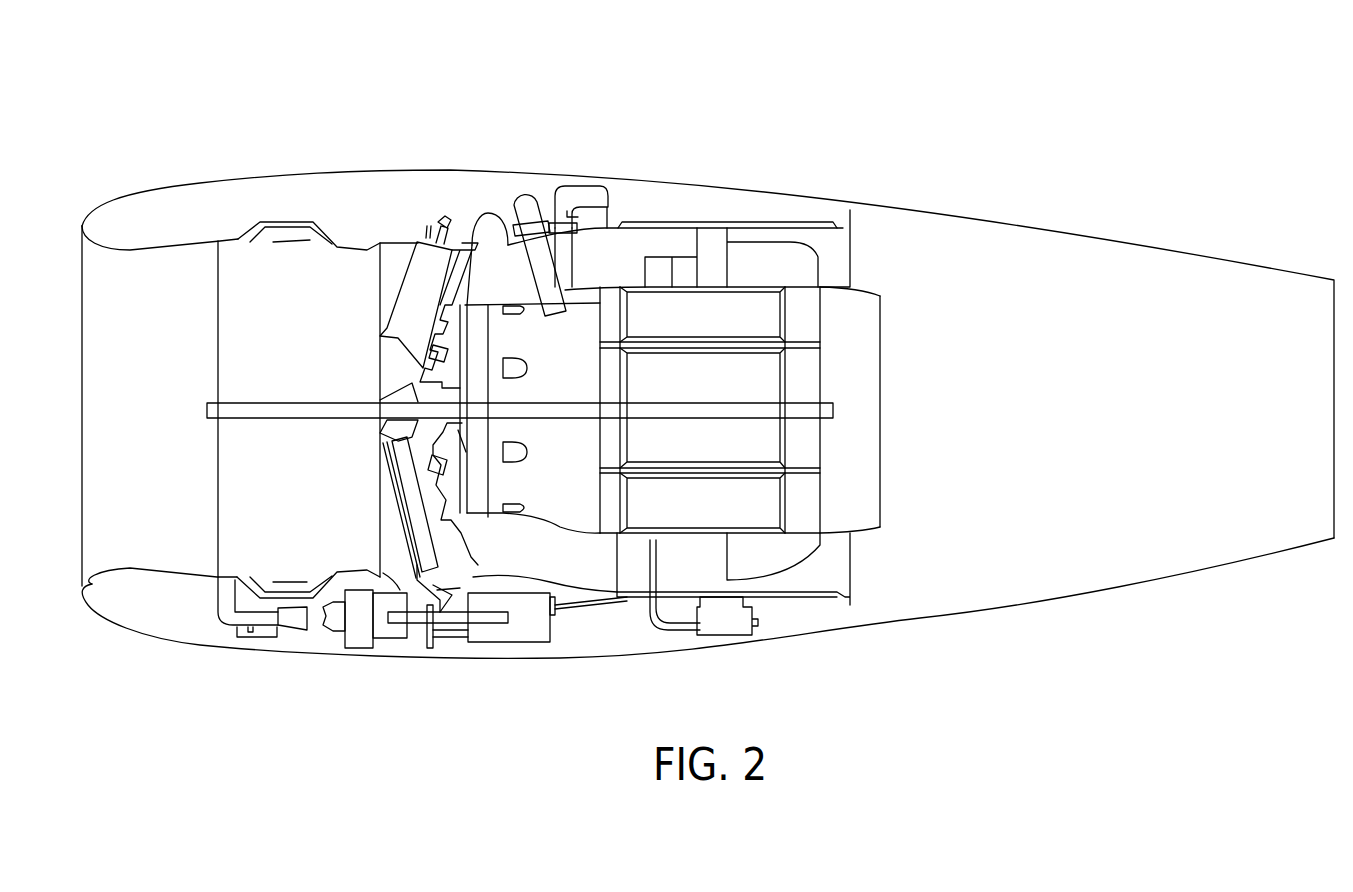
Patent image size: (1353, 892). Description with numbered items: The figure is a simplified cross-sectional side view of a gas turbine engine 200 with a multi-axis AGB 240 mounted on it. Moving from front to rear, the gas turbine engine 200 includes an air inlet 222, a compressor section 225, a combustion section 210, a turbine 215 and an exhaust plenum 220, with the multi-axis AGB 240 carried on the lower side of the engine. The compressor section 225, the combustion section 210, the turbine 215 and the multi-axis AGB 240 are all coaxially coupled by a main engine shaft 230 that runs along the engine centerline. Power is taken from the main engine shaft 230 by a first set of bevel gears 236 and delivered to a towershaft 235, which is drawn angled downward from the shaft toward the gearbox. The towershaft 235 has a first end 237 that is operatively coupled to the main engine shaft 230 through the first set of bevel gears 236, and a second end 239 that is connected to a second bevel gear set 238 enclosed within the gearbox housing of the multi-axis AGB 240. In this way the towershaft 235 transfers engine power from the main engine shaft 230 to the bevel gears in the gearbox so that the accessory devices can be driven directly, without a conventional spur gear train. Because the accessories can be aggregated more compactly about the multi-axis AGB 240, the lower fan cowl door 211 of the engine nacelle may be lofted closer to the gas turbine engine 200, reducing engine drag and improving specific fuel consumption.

The gas turbine engine 200 is at (583, 148).
The combustion section 210 is at (507, 260).
The lower fan cowl door 211 is at (435, 663).
The turbine 215 is at (763, 287).
The exhaust plenum 220 is at (902, 297).
The air inlet 222 is at (170, 273).
The compressor section 225 is at (300, 270).
The main engine shaft 230 is at (546, 408).
The towershaft 235 is at (393, 498).
The first set of bevel gears 236 is at (386, 399).
The first end 237 is at (375, 436).
The second bevel gear set 238 is at (447, 598).
The second end 239 is at (472, 577).
The multi-axis AGB 240 is at (410, 645).